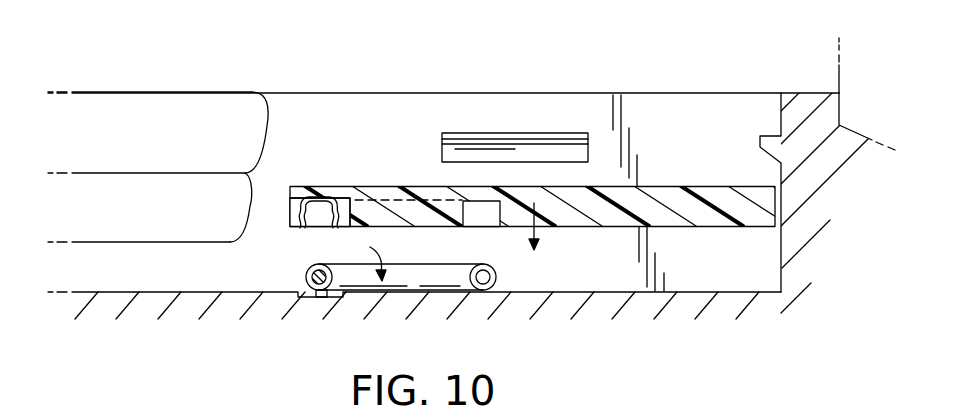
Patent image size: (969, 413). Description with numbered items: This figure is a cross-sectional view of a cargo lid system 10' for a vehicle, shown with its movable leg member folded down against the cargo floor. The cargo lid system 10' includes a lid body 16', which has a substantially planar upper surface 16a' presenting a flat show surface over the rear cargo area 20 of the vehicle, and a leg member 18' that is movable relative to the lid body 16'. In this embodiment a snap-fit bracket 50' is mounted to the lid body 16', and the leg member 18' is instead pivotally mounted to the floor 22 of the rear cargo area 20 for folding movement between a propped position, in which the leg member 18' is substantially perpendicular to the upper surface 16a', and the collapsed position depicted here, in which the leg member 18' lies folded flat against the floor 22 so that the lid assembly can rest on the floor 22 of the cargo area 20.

The cargo lid system 10' is at (158, 232).
The lid body 16' is at (547, 170).
The upper surface 16a' is at (495, 114).
The leg member 18' is at (401, 313).
The rear cargo area 20 is at (745, 255).
The floor 22 is at (563, 290).
The snap-fit bracket 50' is at (313, 176).